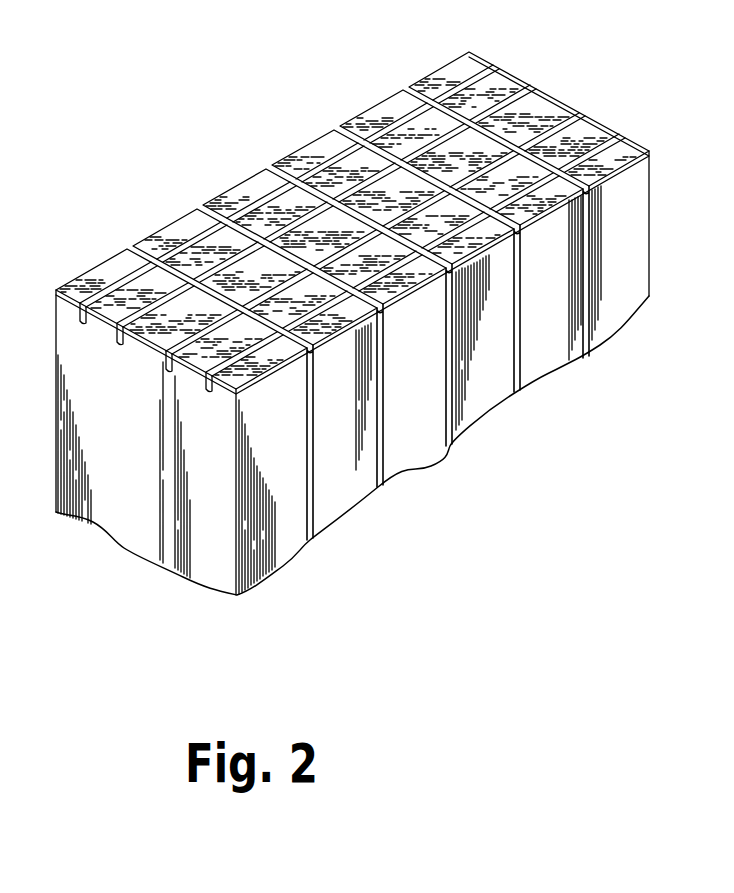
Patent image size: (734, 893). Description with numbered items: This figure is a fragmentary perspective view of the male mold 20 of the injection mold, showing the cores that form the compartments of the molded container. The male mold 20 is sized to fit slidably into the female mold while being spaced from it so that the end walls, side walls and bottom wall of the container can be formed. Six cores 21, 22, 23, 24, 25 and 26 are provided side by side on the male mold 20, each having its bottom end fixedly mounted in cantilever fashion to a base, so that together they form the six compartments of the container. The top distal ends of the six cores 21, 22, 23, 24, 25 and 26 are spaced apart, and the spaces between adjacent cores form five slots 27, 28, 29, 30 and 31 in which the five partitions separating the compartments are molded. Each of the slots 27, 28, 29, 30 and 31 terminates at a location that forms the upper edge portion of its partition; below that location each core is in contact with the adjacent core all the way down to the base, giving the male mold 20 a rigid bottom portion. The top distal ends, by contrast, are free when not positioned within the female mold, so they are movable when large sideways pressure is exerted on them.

The male mold 20 is at (661, 249).
The core 21 is at (103, 263).
The core 22 is at (180, 222).
The core 23 is at (253, 180).
The core 24 is at (323, 140).
The core 25 is at (387, 105).
The core 26 is at (449, 68).
The slot 27 is at (311, 540).
The slot 28 is at (383, 487).
The slot 29 is at (452, 446).
The slot 30 is at (520, 392).
The slot 31 is at (589, 358).